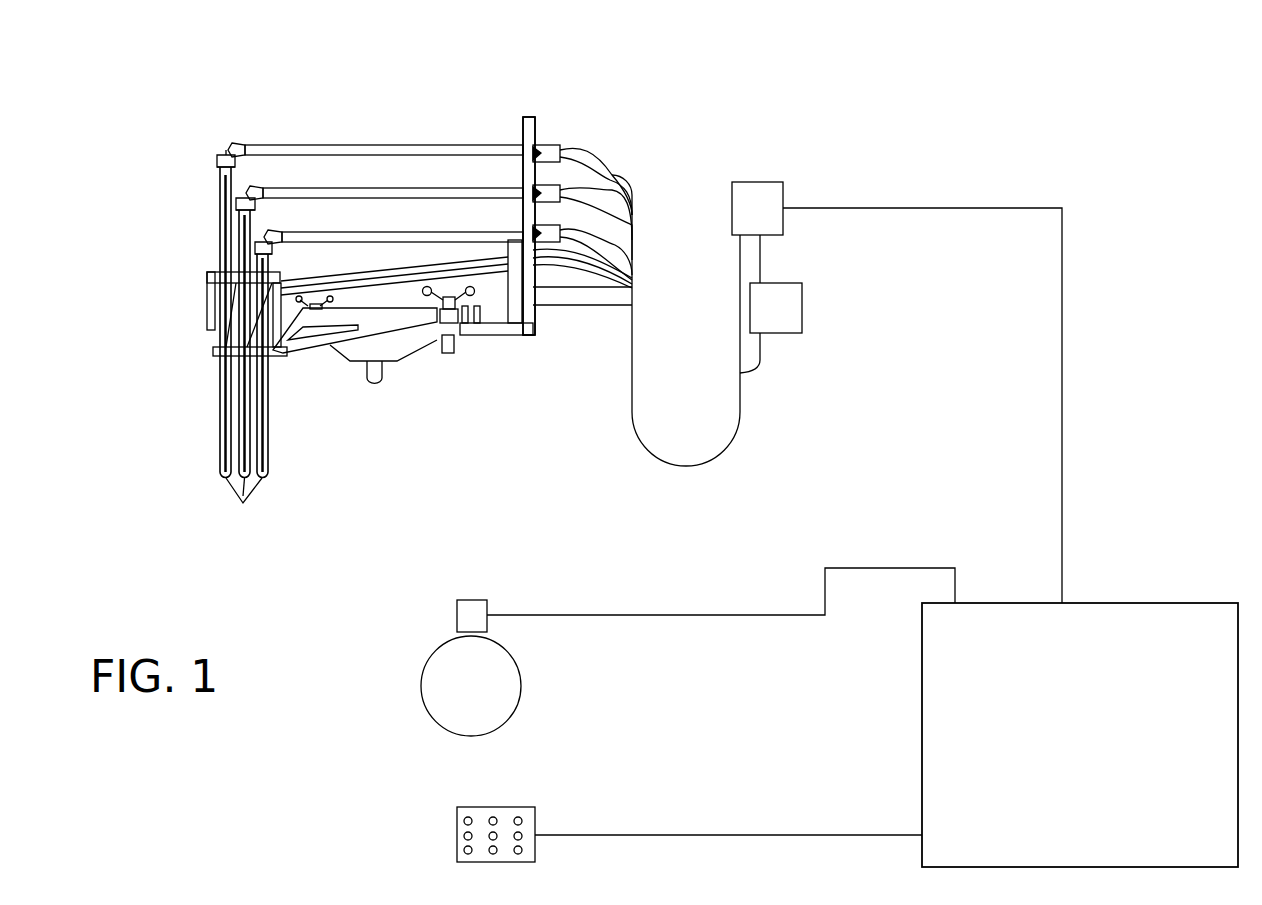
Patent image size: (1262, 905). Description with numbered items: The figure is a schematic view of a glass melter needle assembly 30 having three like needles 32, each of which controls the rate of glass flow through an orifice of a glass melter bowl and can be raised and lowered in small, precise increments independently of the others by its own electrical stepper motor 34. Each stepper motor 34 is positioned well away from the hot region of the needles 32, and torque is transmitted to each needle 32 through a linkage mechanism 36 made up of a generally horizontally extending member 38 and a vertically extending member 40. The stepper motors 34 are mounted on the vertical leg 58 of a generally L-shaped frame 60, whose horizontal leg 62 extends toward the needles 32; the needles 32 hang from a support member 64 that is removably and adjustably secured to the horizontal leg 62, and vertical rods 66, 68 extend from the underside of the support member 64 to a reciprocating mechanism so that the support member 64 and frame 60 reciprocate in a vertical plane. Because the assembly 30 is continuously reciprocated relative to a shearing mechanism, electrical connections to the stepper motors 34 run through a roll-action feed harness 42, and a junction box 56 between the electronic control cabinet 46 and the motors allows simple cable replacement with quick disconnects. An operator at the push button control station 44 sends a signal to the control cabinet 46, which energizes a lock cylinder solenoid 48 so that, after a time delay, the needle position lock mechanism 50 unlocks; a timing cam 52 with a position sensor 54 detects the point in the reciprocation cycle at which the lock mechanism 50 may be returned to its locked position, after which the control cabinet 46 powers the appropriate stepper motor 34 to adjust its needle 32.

The glass melter needle assembly 30 is at (200, 406).
The needle 32 is at (245, 510).
The stepper motor 34 is at (573, 233).
The linkage mechanism 36 is at (314, 120).
The horizontally extending member 38 is at (438, 233).
The vertically extending member 40 is at (262, 256).
The roll-action feed harness 42 is at (680, 466).
The push button operator's control station 44 is at (520, 807).
The electronic control cabinet 46 is at (1136, 603).
The lock cylinder solenoid 48 is at (760, 182).
The needle position lock mechanism 50 is at (198, 300).
The timing cam 52 is at (522, 688).
The position sensor 54 is at (457, 612).
The junction box 56 is at (803, 320).
The vertical leg 58 is at (536, 128).
The L-shaped frame 60 is at (531, 103).
The horizontal leg 62 is at (508, 338).
The support member 64 is at (322, 353).
The vertical rod 66 is at (385, 376).
The vertical rod 68 is at (450, 355).